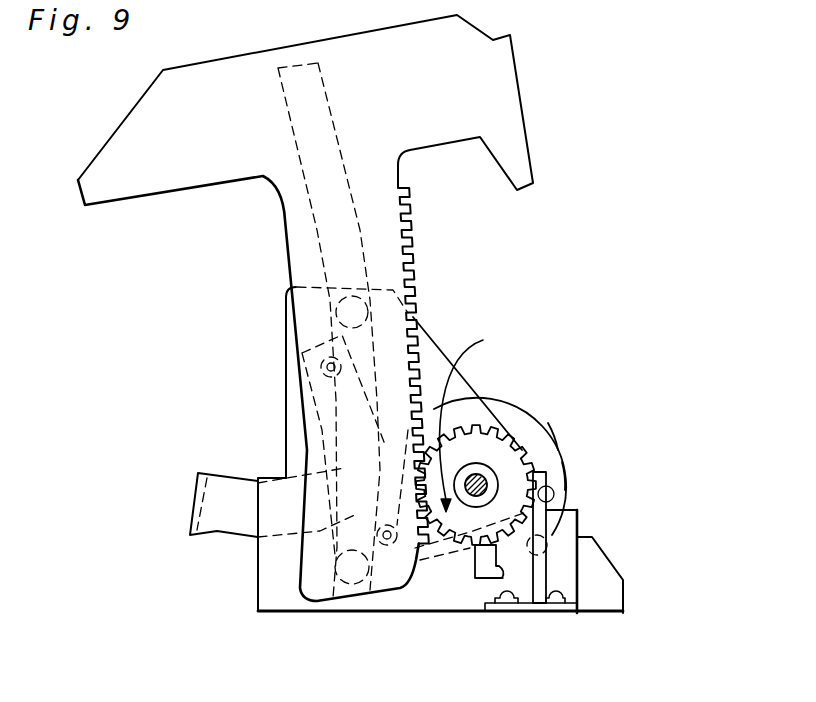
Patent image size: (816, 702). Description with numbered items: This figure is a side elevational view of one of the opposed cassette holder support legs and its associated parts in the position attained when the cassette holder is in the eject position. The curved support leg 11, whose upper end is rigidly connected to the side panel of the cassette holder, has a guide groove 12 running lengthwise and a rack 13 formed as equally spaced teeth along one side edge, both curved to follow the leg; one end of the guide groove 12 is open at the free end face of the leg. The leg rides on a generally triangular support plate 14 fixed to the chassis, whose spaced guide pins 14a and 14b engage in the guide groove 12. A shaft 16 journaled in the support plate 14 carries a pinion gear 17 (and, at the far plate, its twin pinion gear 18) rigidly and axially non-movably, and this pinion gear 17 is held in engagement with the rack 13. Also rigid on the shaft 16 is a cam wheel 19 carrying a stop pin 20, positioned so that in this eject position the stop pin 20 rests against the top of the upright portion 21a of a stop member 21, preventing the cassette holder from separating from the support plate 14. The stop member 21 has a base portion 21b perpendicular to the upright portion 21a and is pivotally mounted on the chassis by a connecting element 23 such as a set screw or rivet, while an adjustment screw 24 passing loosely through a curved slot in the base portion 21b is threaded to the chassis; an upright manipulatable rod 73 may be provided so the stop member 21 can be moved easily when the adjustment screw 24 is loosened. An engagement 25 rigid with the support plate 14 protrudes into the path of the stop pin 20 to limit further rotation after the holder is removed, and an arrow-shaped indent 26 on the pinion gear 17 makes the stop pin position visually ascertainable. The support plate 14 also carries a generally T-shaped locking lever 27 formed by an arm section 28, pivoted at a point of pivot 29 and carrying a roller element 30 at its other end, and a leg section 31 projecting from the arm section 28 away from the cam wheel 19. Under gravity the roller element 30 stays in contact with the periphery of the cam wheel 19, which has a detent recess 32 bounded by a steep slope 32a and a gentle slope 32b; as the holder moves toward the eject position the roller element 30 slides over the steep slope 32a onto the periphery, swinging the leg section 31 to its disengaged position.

The support leg 11 is at (285, 243).
The guide groove 12 is at (317, 213).
The rack 13 is at (407, 219).
The support plate 14 is at (434, 343).
The guide pin 14a is at (360, 290).
The guide pin 14b is at (345, 580).
The shaft 16 is at (538, 430).
The pinion gear 17 is at (478, 484).
The pinion gear 18 is at (476, 485).
The cam wheel 19 is at (557, 447).
The stop pin 20 is at (564, 482).
The stop member 21 is at (577, 585).
The upright portion 21a is at (550, 538).
The base portion 21b is at (558, 605).
The connecting element 23 is at (506, 605).
The adjustment screw 24 is at (575, 603).
The engagement 25 is at (503, 560).
The arrow-shaped indent 26 is at (481, 419).
The locking lever 27 is at (247, 476).
The arm section 28 is at (313, 413).
The point of pivot 29 is at (322, 367).
The roller element 30 is at (387, 548).
The leg section 31 is at (218, 520).
The detent recess 32 is at (453, 550).
The steep slope 32a is at (548, 553).
The gentle slope 32b is at (448, 556).
The upright manipulatable rod 73 is at (552, 573).